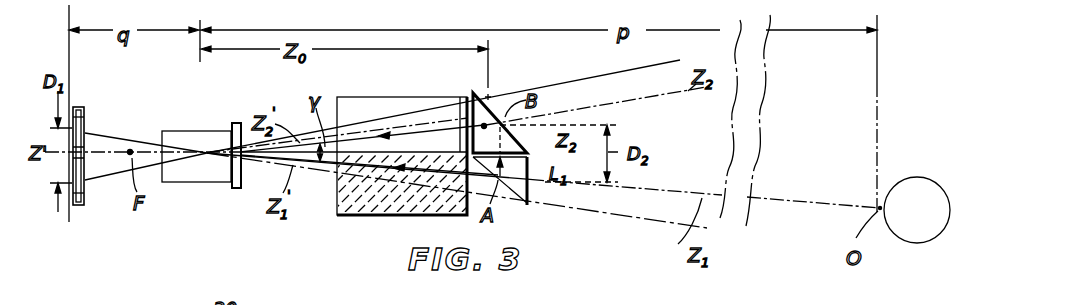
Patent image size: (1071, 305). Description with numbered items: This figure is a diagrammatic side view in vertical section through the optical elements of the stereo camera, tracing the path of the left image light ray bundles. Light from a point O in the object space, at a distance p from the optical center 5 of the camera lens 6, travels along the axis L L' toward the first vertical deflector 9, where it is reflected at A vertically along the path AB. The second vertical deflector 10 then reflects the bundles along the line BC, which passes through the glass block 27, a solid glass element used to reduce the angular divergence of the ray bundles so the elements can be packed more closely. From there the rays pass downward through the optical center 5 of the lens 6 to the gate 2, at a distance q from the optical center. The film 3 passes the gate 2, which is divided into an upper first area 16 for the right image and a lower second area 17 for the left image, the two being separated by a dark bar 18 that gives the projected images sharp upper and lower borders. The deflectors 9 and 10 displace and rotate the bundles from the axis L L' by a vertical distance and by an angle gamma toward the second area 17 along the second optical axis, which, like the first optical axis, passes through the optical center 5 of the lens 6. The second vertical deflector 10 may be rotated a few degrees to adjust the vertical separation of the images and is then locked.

The gate 2 is at (82, 107).
The film 3 is at (67, 47).
The optical center 5 is at (207, 152).
The camera lens 6 is at (202, 183).
The first vertical deflector 9 is at (511, 200).
The second vertical deflector 10 is at (500, 105).
The first area 16 is at (85, 117).
The second area 17 is at (85, 193).
The dark bar 18 is at (87, 138).
The glass block 27 is at (407, 100).